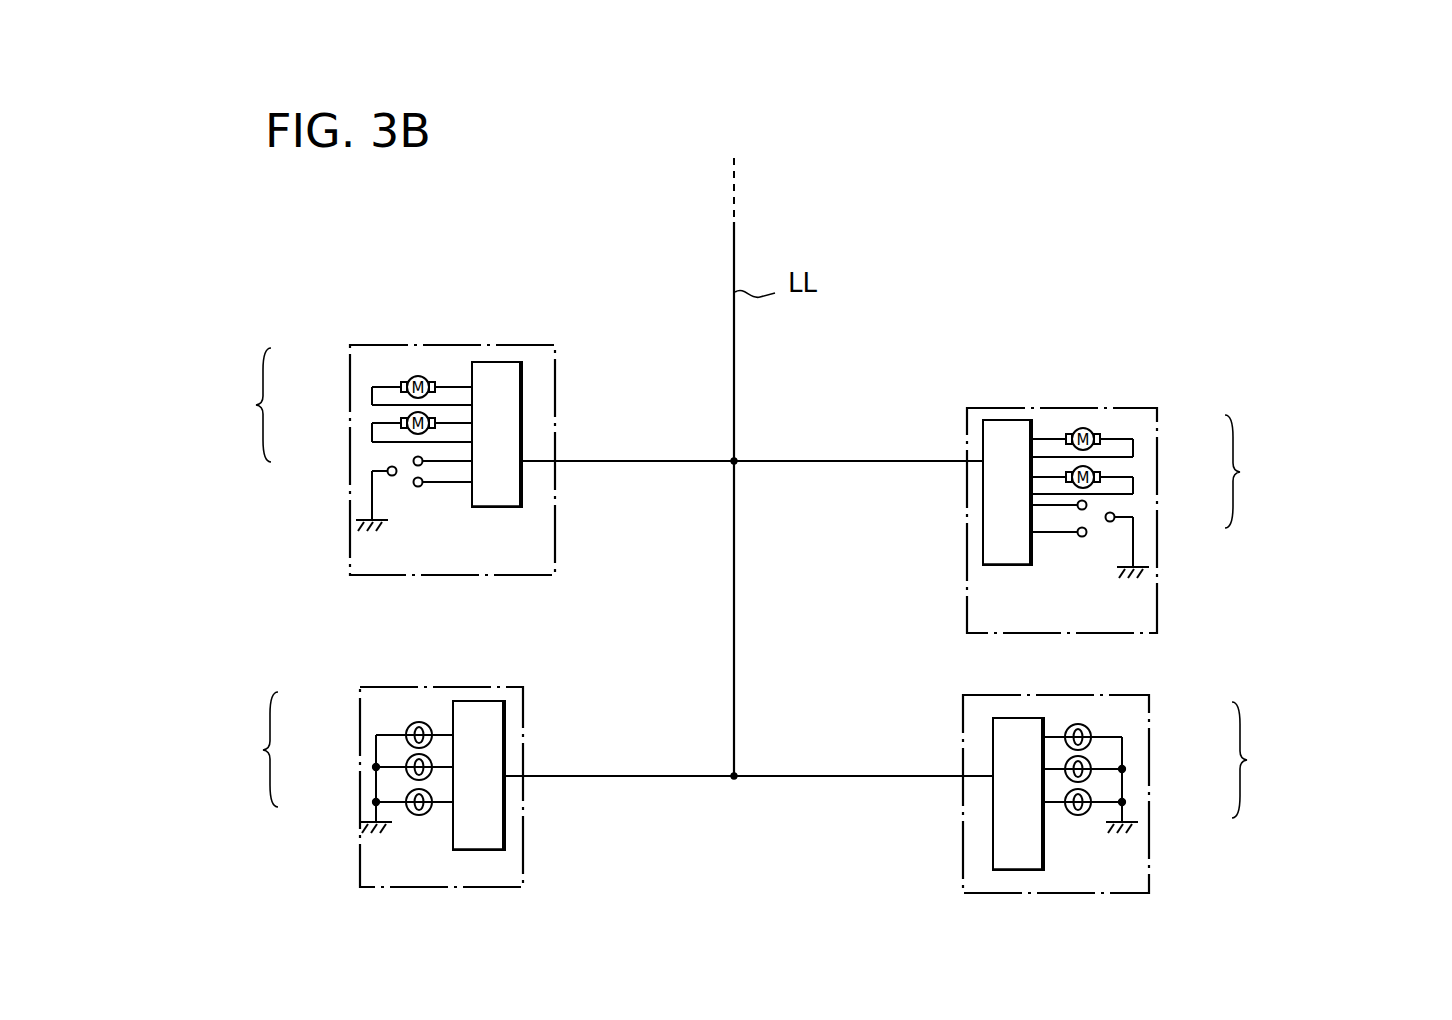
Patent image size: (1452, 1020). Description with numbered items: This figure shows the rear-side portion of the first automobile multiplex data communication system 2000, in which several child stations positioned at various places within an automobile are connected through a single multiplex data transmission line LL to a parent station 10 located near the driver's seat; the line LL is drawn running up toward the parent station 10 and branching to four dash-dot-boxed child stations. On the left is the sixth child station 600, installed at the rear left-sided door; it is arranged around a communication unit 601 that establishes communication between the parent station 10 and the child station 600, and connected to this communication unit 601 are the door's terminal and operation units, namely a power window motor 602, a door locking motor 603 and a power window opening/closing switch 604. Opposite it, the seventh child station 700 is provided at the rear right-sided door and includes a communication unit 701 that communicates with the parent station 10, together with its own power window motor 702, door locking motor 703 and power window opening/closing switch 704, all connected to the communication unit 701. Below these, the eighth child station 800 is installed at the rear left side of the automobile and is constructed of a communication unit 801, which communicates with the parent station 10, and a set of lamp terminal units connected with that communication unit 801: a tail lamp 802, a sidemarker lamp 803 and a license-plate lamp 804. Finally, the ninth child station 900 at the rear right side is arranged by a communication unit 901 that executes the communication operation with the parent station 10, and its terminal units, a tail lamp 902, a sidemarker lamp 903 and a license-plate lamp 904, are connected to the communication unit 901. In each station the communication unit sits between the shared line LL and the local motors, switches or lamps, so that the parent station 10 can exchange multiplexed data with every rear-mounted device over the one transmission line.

The parent station 10 is at (732, 159).
The automobile multiplex data communication system 2000 is at (1213, 197).
The sixth child station 600 is at (532, 315).
The communication unit 601 is at (497, 510).
The power window motor 602 is at (388, 378).
The door locking motor 603 is at (385, 415).
The power window opening/closing switch 604 is at (392, 456).
The seventh child station 700 is at (1153, 382).
The communication unit 701 is at (928, 530).
The power window motor 702 is at (1113, 428).
The door locking motor 703 is at (1113, 468).
The power window opening/closing switch 704 is at (1113, 507).
The eighth child station 800 is at (610, 672).
The communication unit 801 is at (505, 745).
The tail lamp 802 is at (395, 727).
The sidemarker lamp 803 is at (393, 763).
The license-plate lamp 804 is at (393, 793).
The ninth child station 900 is at (1218, 679).
The communication unit 901 is at (1002, 820).
The tail lamp 902 is at (1108, 717).
The sidemarker lamp 903 is at (1105, 757).
The license-plate lamp 904 is at (1105, 790).